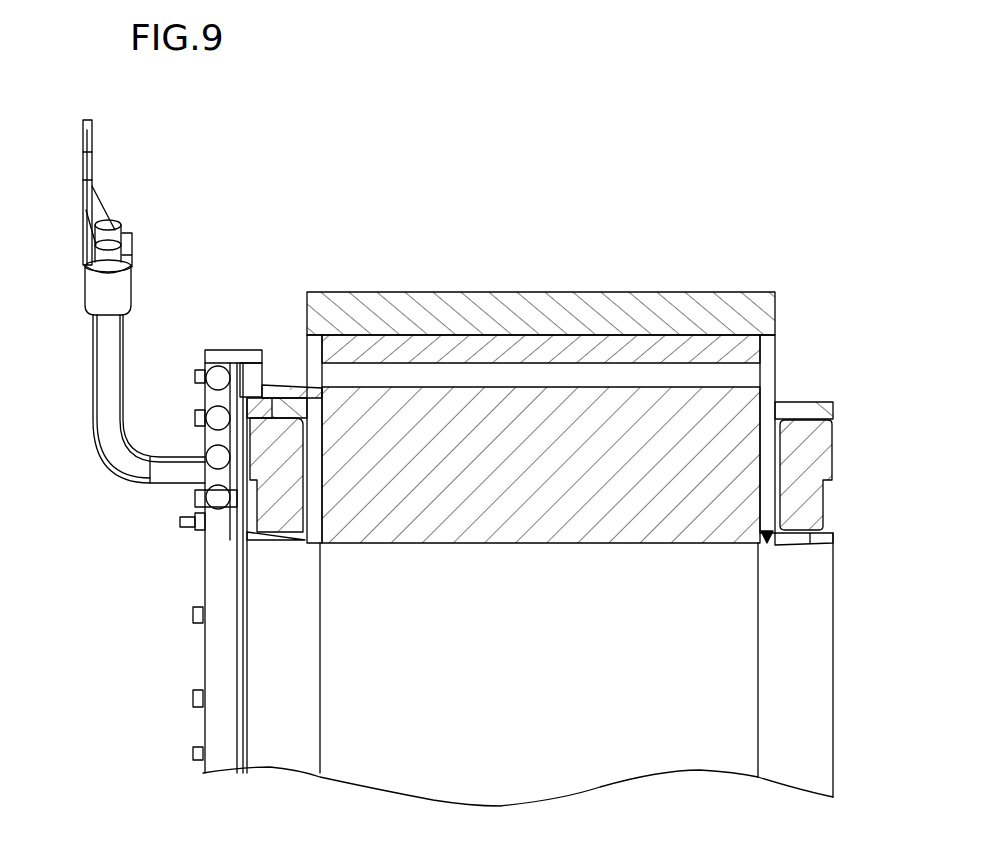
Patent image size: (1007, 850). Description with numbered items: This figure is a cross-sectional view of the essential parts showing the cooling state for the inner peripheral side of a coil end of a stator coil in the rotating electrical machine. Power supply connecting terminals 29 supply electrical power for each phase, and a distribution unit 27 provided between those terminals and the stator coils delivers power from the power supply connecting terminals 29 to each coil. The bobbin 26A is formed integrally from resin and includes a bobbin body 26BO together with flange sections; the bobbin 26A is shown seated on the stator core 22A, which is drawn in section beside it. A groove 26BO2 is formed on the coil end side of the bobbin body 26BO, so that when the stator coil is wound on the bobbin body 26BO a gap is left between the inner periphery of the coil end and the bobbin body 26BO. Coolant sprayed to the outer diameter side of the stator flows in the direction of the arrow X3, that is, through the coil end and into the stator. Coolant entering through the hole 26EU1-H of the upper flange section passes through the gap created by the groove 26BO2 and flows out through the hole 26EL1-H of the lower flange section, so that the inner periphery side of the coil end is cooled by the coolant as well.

The power supply connecting terminal 29 is at (88, 188).
The distribution unit 27 is at (233, 352).
The arrow X3 is at (276, 345).
The hole of flange section 26EU1 26EU1-H is at (280, 412).
The hole of flange section 26EL1 26EL1-H is at (303, 537).
The groove 26BO2 is at (305, 487).
The bobbin body 26BO is at (320, 550).
The stator core tooth 22A is at (573, 522).
The bobbin 26A is at (768, 543).